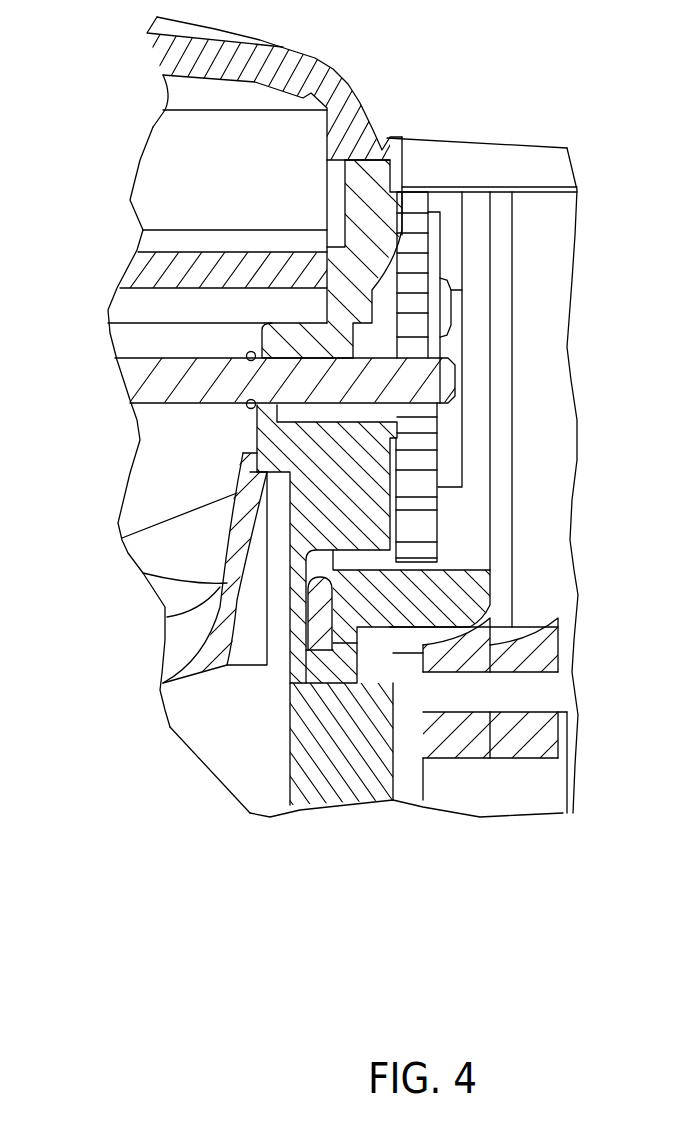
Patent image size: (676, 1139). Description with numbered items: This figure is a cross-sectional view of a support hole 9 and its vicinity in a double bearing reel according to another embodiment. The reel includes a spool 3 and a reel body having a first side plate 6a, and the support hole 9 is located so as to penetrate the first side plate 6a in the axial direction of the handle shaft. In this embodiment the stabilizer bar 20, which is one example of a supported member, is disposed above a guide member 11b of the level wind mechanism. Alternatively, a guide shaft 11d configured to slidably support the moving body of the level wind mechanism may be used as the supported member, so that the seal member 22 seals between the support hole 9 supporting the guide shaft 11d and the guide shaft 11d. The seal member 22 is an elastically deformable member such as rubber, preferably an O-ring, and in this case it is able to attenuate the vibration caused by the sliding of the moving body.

The spool 3 is at (163, 702).
The first side plate 6a is at (332, 776).
The support hole 9 is at (400, 222).
The guide member 11b is at (202, 249).
The guide shaft 11d is at (143, 230).
The stabilizer bar 20 is at (126, 353).
The seal member 22 is at (333, 250).